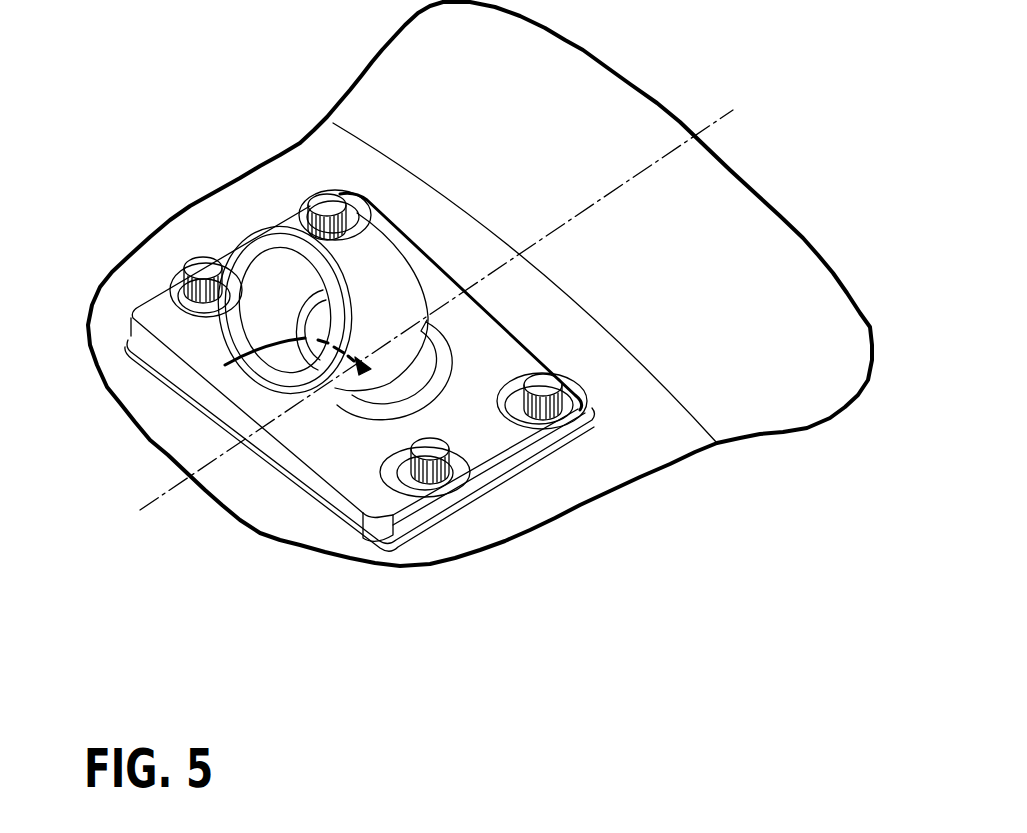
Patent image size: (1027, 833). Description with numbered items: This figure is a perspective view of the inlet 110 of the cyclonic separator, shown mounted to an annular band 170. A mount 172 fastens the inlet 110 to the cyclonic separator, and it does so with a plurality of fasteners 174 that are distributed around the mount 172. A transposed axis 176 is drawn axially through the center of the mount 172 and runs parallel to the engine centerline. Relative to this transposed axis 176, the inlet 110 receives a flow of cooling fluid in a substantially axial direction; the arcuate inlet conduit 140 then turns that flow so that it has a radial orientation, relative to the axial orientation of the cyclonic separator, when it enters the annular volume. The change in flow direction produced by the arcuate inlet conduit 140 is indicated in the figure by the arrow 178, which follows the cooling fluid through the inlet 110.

The inlet 110 is at (290, 319).
The arcuate inlet conduit 140 is at (373, 293).
The annular band 170 is at (657, 443).
The mount 172 is at (343, 463).
The fasteners 174 is at (205, 270).
The transposed axis 176 is at (163, 498).
The arrow 178 is at (225, 365).